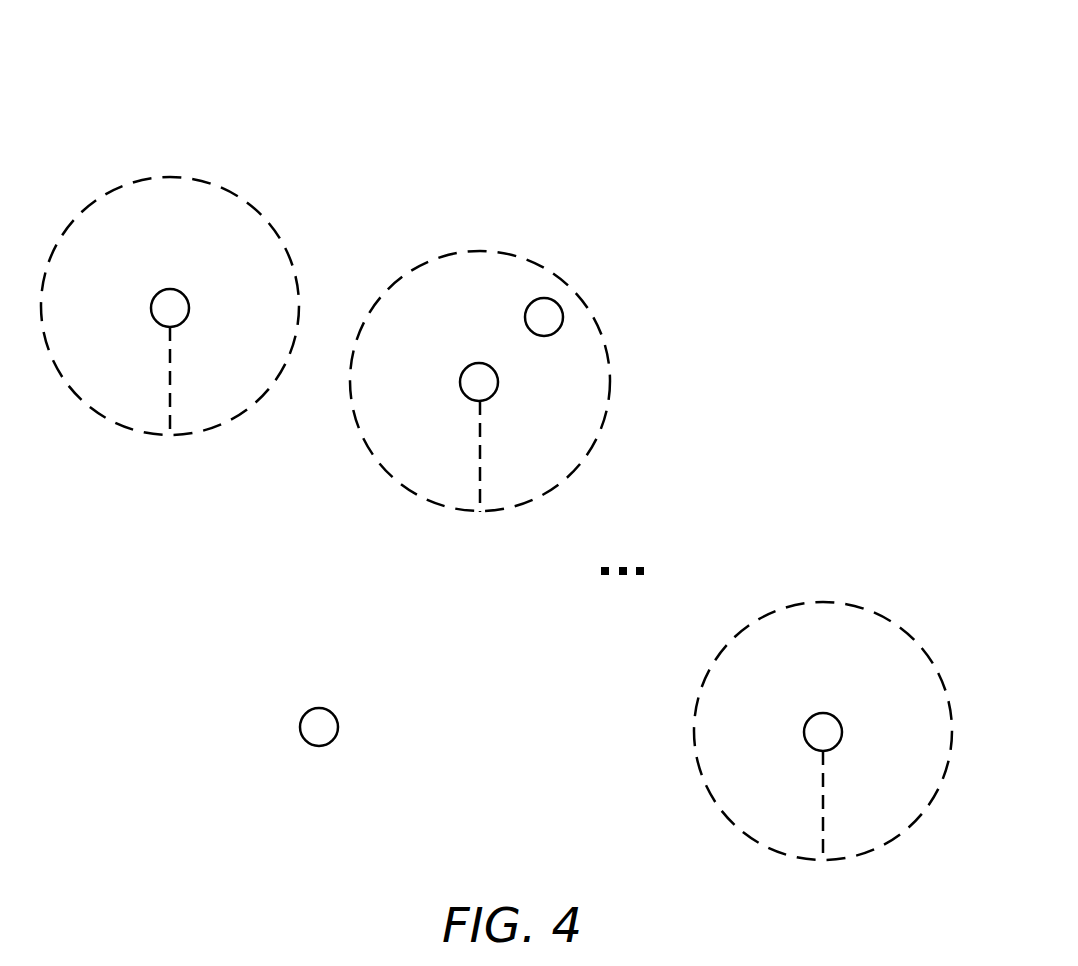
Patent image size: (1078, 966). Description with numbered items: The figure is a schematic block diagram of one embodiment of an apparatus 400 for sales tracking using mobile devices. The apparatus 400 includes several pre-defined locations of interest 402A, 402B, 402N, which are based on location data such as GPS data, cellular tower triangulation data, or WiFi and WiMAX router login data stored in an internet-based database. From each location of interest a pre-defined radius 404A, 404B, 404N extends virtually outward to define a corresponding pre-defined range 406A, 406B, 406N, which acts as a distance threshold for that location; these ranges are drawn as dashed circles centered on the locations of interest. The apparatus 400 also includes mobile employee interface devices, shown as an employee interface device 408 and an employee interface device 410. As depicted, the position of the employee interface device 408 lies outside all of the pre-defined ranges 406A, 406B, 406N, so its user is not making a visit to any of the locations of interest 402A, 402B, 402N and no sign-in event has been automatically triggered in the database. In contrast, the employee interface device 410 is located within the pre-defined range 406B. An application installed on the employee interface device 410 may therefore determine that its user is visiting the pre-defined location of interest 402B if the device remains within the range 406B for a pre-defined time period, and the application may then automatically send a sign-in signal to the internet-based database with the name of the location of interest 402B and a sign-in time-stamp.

The apparatus 400 is at (80, 62).
The pre-defined location of interest 402A is at (168, 306).
The pre-defined location of interest 402B is at (478, 363).
The pre-defined location of interest 402N is at (822, 730).
The pre-defined radius 404A is at (168, 392).
The pre-defined radius 404B is at (478, 448).
The pre-defined radius 404N is at (822, 817).
The pre-defined range 406A is at (168, 176).
The pre-defined range 406B is at (412, 272).
The pre-defined range 406N is at (822, 602).
The employee interface device 408 is at (300, 722).
The employee interface device 410 is at (553, 298).